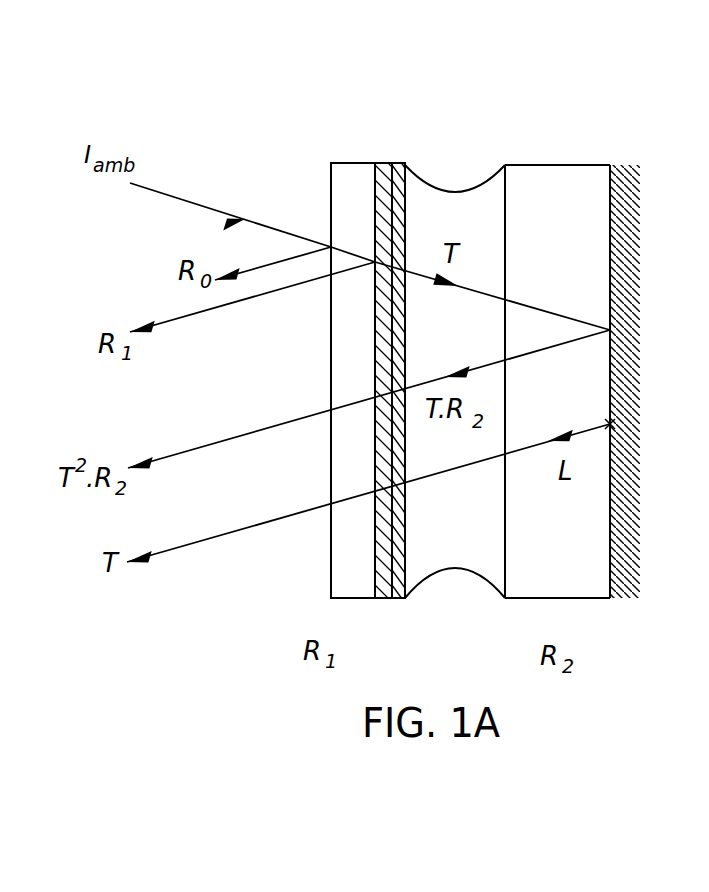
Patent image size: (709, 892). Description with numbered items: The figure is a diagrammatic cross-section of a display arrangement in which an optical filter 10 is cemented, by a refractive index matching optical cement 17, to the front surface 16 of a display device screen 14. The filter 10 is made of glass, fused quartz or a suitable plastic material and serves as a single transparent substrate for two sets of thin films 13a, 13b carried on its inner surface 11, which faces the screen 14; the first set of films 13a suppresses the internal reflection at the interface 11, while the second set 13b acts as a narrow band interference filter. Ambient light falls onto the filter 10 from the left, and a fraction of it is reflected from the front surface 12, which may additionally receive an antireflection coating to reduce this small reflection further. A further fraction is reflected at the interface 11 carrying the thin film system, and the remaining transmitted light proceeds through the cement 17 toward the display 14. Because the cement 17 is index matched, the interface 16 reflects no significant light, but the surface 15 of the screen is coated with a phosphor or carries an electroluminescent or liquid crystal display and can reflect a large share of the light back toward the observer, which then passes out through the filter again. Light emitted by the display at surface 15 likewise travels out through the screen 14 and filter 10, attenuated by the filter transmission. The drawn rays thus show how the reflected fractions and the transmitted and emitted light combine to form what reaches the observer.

The optical filter 10 is at (345, 557).
The inner surface 11 is at (375, 185).
The front surface 12 is at (331, 205).
The first set of thin films 13a is at (387, 172).
The second set of thin films 13b is at (400, 183).
The display device screen 14 is at (555, 215).
The surface 15 is at (610, 223).
The front surface 16 is at (505, 551).
The refractive index matching optical cement 17 is at (459, 212).